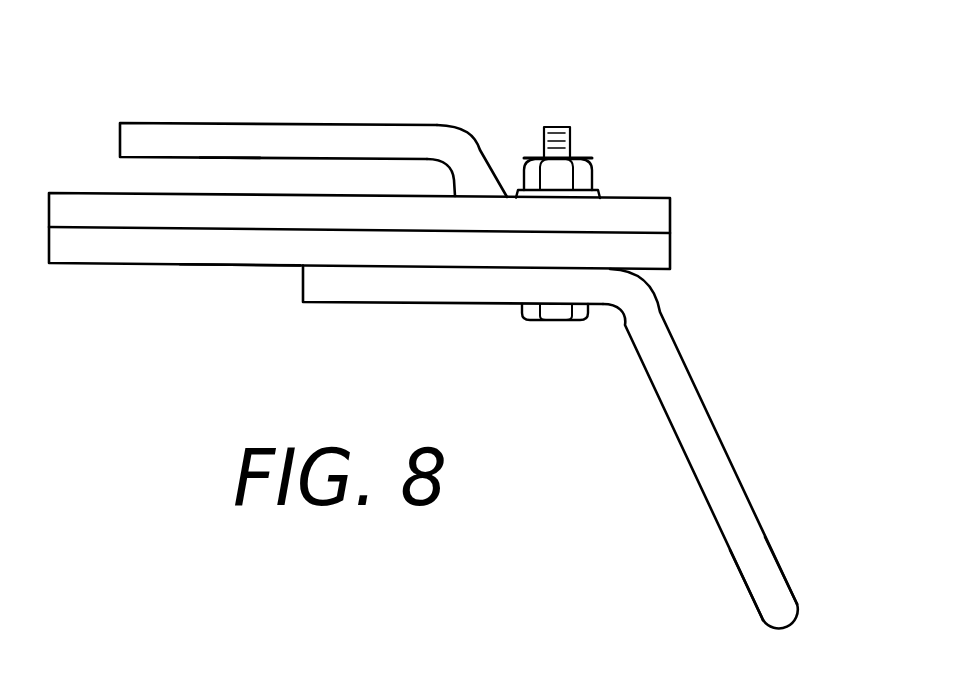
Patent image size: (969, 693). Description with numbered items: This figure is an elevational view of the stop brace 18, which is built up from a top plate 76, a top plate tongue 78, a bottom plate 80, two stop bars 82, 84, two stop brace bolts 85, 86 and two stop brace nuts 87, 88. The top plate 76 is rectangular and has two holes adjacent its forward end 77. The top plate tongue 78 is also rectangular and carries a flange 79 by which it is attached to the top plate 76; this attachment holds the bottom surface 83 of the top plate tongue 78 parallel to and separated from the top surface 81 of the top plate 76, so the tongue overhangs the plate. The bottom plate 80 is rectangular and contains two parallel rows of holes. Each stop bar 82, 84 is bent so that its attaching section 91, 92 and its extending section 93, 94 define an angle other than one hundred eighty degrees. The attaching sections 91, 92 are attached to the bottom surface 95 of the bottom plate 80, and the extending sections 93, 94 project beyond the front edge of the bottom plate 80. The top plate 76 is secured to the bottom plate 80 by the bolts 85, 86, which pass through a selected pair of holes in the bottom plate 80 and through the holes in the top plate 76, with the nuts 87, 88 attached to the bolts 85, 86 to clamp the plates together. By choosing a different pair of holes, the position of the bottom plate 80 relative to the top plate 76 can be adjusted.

The stop brace 18 is at (384, 95).
The top plate tongue 78 is at (257, 124).
The flange 79 is at (473, 141).
The bottom surface 83 is at (237, 158).
The top plate 76 is at (665, 181).
The forward end 77 is at (670, 220).
The top surface 81 is at (606, 195).
The stop brace nut 87 is at (583, 159).
The stop brace nut 88 is at (558, 174).
The bottom plate 80 is at (100, 280).
The bottom surface 95 is at (237, 264).
The attaching section 91 is at (320, 303).
The attaching section 92 is at (453, 285).
The stop brace bolt 85 is at (572, 322).
The stop brace bolt 86 is at (555, 312).
The stop bar 82 is at (718, 388).
The stop bar 84 is at (700, 444).
The extending section 93 is at (707, 490).
The extending section 94 is at (764, 582).